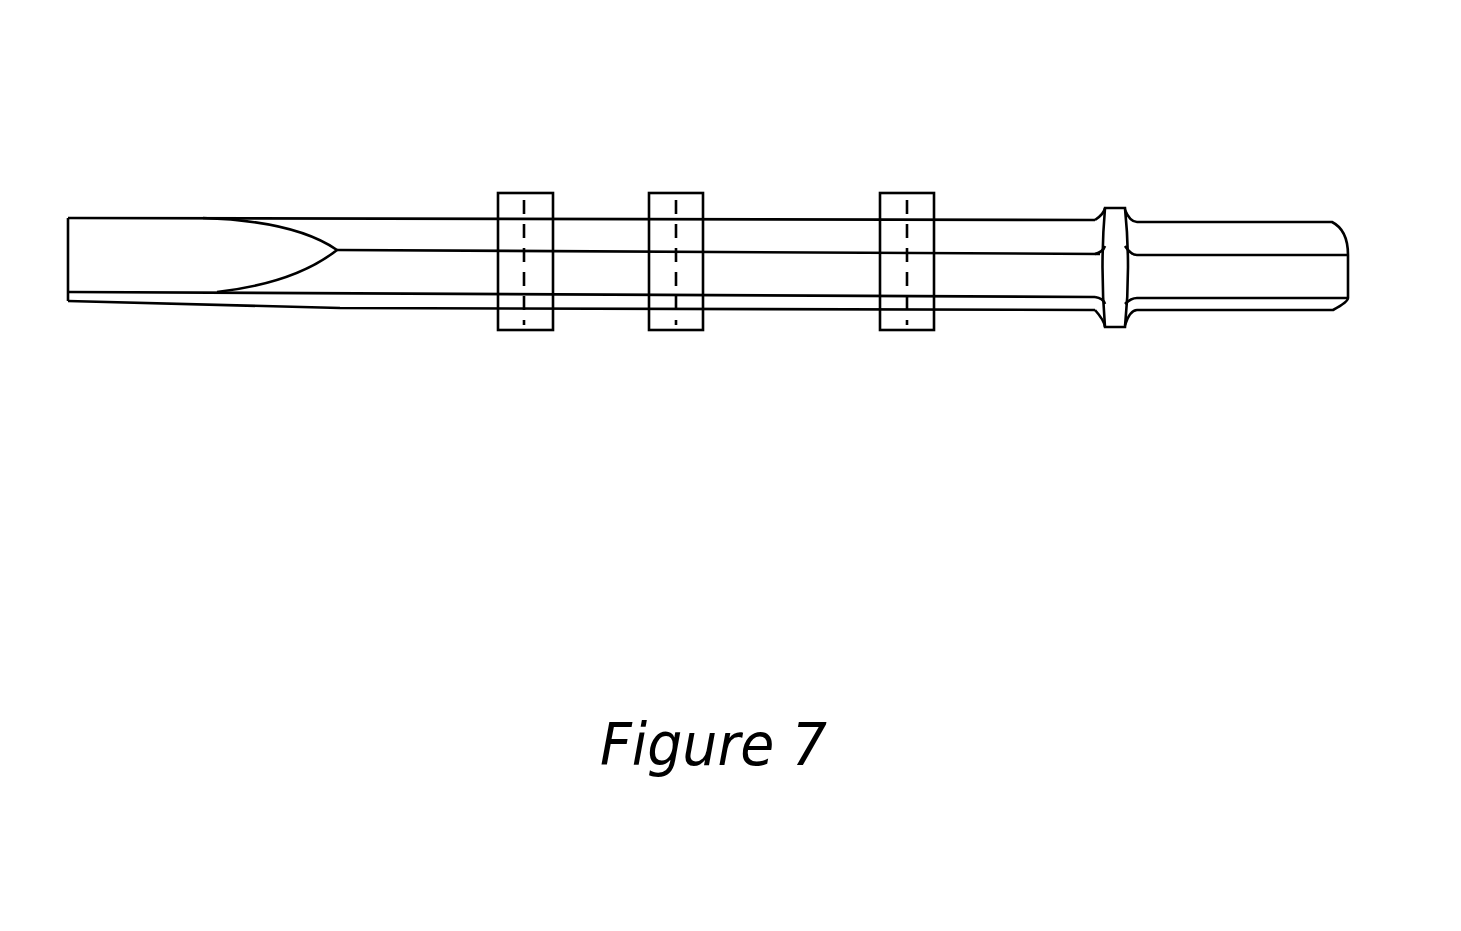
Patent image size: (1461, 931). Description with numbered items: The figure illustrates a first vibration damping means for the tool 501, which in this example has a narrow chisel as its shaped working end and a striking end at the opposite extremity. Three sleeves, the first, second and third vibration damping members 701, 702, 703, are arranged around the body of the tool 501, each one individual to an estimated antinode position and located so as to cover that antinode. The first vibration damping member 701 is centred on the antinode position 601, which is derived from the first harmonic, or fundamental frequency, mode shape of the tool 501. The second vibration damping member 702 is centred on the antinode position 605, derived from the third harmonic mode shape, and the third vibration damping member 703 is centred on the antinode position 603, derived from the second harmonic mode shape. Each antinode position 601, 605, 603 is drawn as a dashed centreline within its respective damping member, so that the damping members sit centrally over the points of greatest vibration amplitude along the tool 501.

The tool 501 is at (1260, 322).
The antinode position 601 is at (524, 210).
The antinode position 605 is at (676, 210).
The antinode position 603 is at (907, 210).
The first vibration damping member 701 is at (540, 322).
The second vibration damping member 702 is at (693, 322).
The third vibration damping member 703 is at (924, 322).